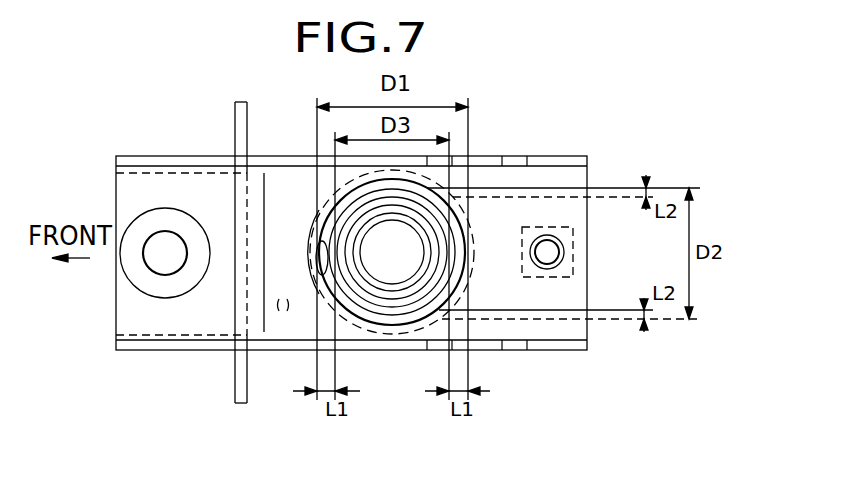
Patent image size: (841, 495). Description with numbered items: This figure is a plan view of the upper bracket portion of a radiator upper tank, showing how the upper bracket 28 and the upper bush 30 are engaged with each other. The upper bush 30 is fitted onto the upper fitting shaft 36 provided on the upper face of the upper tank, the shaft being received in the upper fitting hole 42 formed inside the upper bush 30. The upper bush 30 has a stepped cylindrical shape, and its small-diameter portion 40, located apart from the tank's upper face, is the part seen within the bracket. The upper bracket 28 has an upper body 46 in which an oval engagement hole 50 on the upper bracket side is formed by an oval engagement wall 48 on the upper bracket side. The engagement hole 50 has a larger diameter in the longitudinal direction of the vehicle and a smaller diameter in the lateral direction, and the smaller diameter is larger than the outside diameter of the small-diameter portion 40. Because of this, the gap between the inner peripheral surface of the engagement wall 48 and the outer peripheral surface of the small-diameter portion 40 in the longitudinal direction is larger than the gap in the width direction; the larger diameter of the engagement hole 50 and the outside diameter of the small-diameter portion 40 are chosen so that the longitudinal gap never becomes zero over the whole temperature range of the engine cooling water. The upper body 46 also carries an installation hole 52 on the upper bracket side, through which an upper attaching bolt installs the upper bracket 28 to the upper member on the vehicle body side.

The upper bracket 28 is at (560, 146).
The upper bush 30 is at (457, 217).
The upper fitting shaft 36 is at (400, 265).
The small-diameter portion 40 is at (367, 293).
The upper fitting hole 42 is at (386, 234).
The upper body 46 is at (189, 323).
The engagement wall on the upper bracket side 48 is at (473, 267).
The engagement hole on the upper bracket side 50 is at (320, 297).
The installation hole on the upper bracket side 52 is at (157, 260).